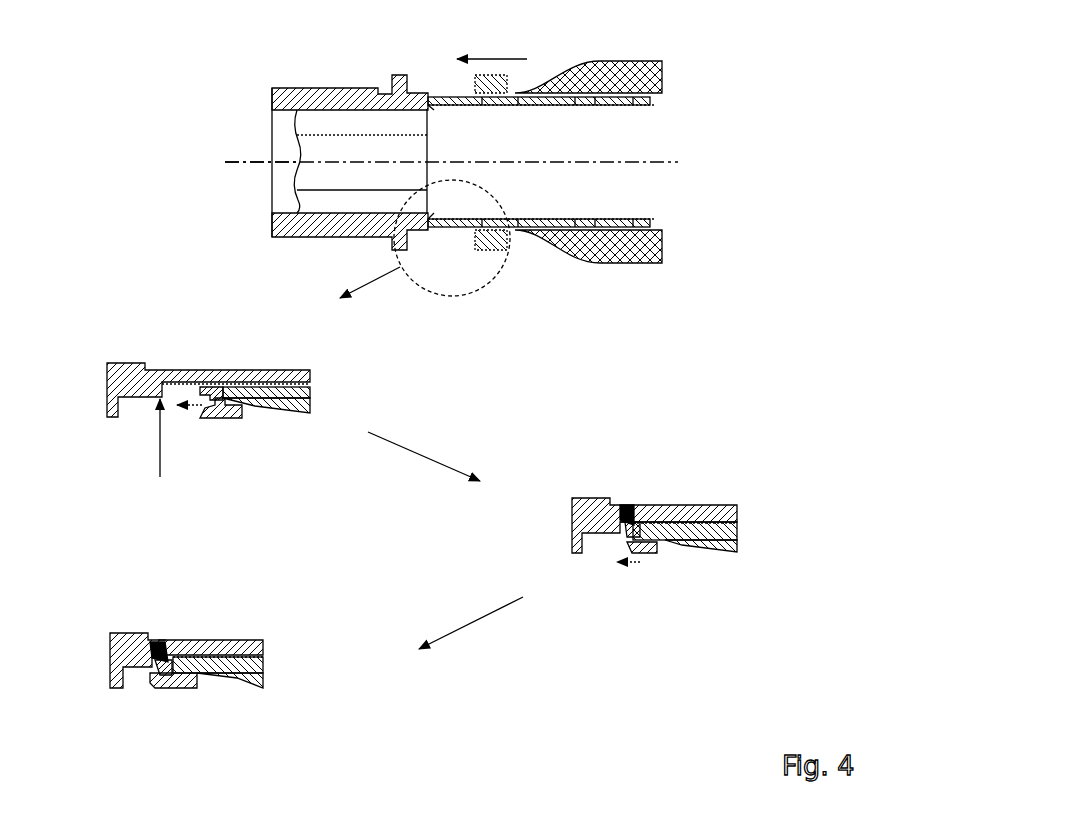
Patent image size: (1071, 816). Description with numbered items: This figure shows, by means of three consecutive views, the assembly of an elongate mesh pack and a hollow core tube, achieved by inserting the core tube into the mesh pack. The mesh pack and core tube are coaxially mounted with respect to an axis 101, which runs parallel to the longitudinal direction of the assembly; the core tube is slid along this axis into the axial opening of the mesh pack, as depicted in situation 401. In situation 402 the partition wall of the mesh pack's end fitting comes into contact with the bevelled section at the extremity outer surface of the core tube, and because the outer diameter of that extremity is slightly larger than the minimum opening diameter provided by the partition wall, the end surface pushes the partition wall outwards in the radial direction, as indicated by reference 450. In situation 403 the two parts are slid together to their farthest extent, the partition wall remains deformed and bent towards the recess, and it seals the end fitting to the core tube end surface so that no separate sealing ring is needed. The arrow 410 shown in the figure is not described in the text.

The axis 101 is at (245, 160).
The insertion direction 410 is at (492, 42).
The radial outward deformation 450 is at (628, 532).
The situation 401 is at (512, 402).
The situation 402 is at (465, 543).
The situation 403 is at (512, 668).